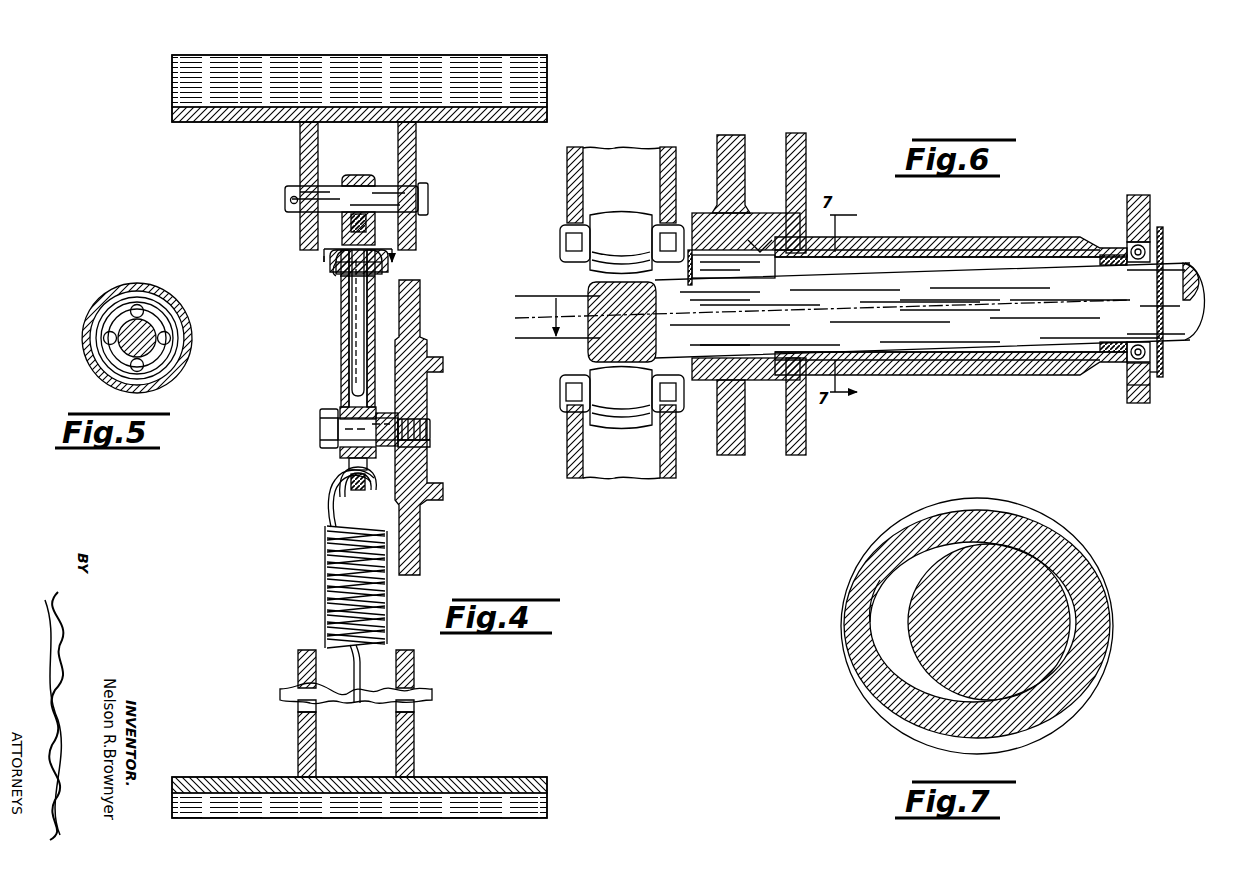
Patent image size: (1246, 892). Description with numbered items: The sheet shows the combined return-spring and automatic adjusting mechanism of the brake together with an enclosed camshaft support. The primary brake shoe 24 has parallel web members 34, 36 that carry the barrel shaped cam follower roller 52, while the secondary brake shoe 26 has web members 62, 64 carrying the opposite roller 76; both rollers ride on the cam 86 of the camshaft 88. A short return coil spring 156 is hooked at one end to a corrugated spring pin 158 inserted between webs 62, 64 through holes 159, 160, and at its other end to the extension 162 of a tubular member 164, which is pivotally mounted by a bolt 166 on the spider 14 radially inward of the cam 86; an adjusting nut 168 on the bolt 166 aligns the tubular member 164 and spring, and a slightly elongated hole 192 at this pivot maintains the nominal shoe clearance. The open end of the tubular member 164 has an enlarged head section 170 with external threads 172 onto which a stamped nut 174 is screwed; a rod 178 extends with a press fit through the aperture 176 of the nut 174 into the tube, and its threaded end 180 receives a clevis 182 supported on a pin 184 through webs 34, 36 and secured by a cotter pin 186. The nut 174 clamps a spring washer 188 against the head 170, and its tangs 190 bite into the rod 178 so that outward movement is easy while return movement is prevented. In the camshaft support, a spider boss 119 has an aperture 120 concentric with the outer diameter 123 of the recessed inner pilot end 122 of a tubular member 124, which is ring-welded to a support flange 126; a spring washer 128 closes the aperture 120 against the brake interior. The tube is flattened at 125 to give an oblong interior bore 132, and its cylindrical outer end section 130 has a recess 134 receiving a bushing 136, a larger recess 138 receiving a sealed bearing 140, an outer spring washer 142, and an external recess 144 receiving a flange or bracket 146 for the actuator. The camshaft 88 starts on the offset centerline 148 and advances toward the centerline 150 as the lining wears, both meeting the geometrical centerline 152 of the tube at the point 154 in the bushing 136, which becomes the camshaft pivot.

In FIG. 4, the spider 14 is at (421, 401).
In FIG. 4, the primary brake shoe 24 is at (246, 124).
In FIG. 6, the primary brake shoe 24 is at (615, 142).
In FIG. 4, the secondary brake shoe 26 is at (459, 775).
In FIG. 6, the secondary brake shoe 26 is at (600, 470).
In FIG. 4, the web member 34 is at (300, 160).
In FIG. 6, the web member 34 is at (567, 188).
In FIG. 4, the web member 36 is at (416, 160).
In FIG. 6, the web member 36 is at (676, 172).
In FIG. 6, the cam follower roller 52 is at (616, 214).
In FIG. 4, the web member 62 is at (316, 750).
In FIG. 6, the web member 62 is at (567, 440).
In FIG. 4, the web member 64 is at (415, 750).
In FIG. 6, the web member 64 is at (676, 462).
In FIG. 6, the cam follower roller 76 is at (612, 413).
In FIG. 6, the cam 86 is at (598, 340).
In FIG. 7, the camshaft 88 is at (1062, 615).
In FIG. 6, the spider boss 119 is at (770, 212).
In FIG. 6, the aperture 120 is at (745, 236).
In FIG. 6, the recessed inner pilot end 122 is at (834, 245).
In FIG. 6, the outer diameter 123 is at (790, 236).
In FIG. 6, the tubular member 124 is at (926, 238).
In FIG. 7, the tubular member 124 is at (1068, 560).
In FIG. 7, the flattened portion 125 is at (985, 508).
In FIG. 6, the support flange 126 is at (806, 146).
In FIG. 6, the spring washer 128 is at (696, 265).
In FIG. 6, the outer end section 130 is at (1108, 244).
In FIG. 7, the oblong interior bore 132 is at (880, 578).
In FIG. 6, the recess 134 is at (1126, 342).
In FIG. 6, the bushing 136 is at (1104, 263).
In FIG. 6, the recess 138 is at (1153, 250).
In FIG. 6, the sealed bearing 140 is at (1152, 352).
In FIG. 6, the spring washer 142 is at (1163, 238).
In FIG. 6, the recess 144 is at (1152, 378).
In FIG. 6, the flange or bracket 146 is at (1126, 388).
In FIG. 6, the offset centerline 148 is at (766, 312).
In FIG. 6, the centerline 150 is at (852, 298).
In FIG. 6, the geometrical centerline 152 is at (712, 308).
In FIG. 6, the intersection point 154 is at (1122, 306).
In FIG. 4, the return coil spring 156 is at (331, 589).
In FIG. 4, the corrugated spring pin 158 is at (425, 692).
In FIG. 4, the hole 159 is at (412, 708).
In FIG. 4, the hole 160 is at (299, 702).
In FIG. 4, the extension 162 is at (359, 491).
In FIG. 4, the tubular member 164 is at (342, 356).
In FIG. 4, the bolt 166 is at (343, 429).
In FIG. 4, the adjusting nut 168 is at (354, 408).
In FIG. 4, the enlarged head section 170 is at (337, 292).
In FIG. 4, the external threads 172 is at (340, 272).
In FIG. 4, the stamped nut 174 is at (386, 271).
In FIG. 5, the stamped nut 174 is at (88, 322).
In FIG. 4, the aperture 176 is at (396, 243).
In FIG. 5, the aperture 176 is at (172, 350).
In FIG. 4, the rod 178 is at (357, 325).
In FIG. 5, the rod 178 is at (120, 343).
In FIG. 4, the threads 180 is at (372, 225).
In FIG. 4, the clevis 182 is at (360, 177).
In FIG. 4, the pin 184 is at (420, 201).
In FIG. 4, the cotter pin 186 is at (292, 209).
In FIG. 4, the spring washer 188 is at (333, 262).
In FIG. 5, the spring washer 188 is at (152, 307).
In FIG. 5, the tangs 190 is at (167, 324).
In FIG. 4, the elongated hole 192 is at (418, 447).